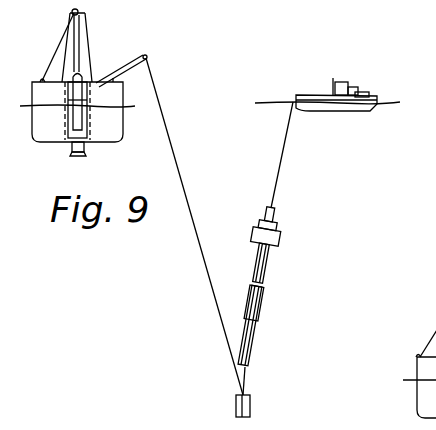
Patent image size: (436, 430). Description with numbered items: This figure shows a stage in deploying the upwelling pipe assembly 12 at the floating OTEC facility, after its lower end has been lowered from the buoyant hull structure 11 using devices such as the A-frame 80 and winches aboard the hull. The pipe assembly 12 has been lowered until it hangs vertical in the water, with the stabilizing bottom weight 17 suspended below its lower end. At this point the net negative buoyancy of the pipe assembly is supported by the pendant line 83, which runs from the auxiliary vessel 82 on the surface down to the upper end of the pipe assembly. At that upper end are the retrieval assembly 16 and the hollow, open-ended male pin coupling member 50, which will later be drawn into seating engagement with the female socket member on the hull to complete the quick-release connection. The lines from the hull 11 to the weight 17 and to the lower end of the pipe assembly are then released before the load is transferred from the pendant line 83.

The buoyant hull structure 11 is at (40, 95).
The A-frame 80 is at (152, 24).
The auxiliary vessel 82 is at (417, 48).
The pendant line 83 is at (282, 160).
The male pin coupling member 50 is at (282, 216).
The retrieval assembly 16 is at (287, 245).
The upwelling pipe assembly 12 is at (268, 308).
The stabilizing bottom weight 17 is at (252, 406).